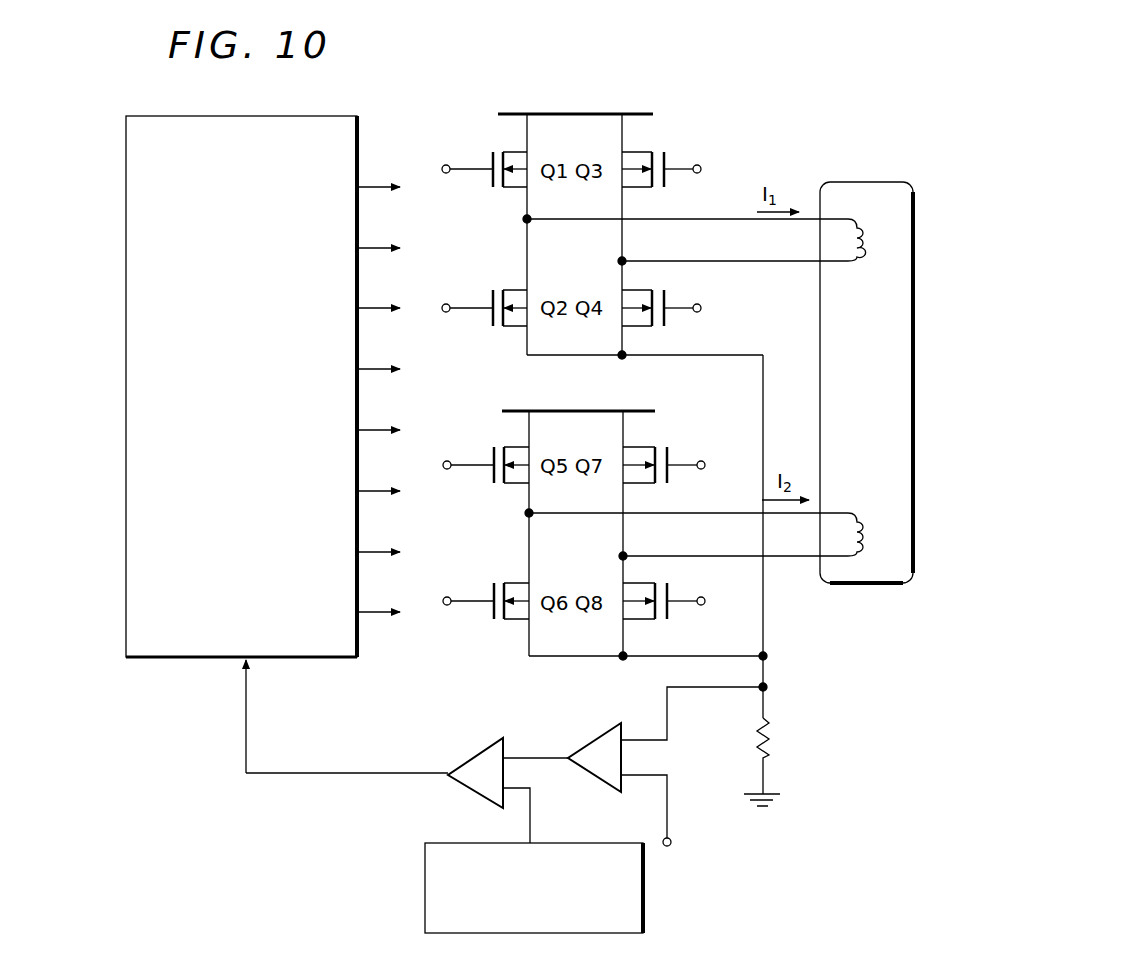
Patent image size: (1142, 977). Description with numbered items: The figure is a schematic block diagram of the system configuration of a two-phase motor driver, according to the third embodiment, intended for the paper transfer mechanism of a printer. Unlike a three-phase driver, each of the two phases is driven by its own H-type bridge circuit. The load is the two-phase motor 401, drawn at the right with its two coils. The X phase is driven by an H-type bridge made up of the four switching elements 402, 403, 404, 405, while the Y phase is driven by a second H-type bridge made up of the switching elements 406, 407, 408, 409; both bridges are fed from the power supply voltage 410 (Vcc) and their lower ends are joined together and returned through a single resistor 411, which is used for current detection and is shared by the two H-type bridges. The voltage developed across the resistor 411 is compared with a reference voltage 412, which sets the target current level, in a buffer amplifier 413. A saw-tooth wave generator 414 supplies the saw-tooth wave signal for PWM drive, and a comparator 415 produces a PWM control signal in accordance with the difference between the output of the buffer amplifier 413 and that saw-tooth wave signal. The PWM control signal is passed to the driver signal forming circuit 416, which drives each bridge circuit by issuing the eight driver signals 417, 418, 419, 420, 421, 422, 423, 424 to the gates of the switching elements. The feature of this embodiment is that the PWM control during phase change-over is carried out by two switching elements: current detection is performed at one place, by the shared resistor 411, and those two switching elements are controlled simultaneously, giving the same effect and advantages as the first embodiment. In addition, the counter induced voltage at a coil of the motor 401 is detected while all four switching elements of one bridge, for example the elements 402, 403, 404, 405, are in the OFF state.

The two-phase motor 401 is at (872, 586).
The switching element 402 is at (496, 146).
The switching element 403 is at (493, 283).
The switching element 404 is at (664, 146).
The switching element 405 is at (668, 282).
The switching element 406 is at (500, 442).
The switching element 407 is at (500, 578).
The switching element 408 is at (661, 441).
The switching element 409 is at (663, 580).
The power supply voltage Vcc 410 is at (498, 113).
The resistor for current detection 411 is at (776, 732).
The reference voltage 412 is at (686, 857).
The buffer amplifier 413 is at (622, 731).
The saw-tooth wave generator 414 is at (425, 881).
The comparator 415 is at (505, 740).
The driver signal forming circuit 416 is at (345, 657).
The driver signal 417 is at (381, 172).
The driver signal 418 is at (381, 233).
The driver signal 419 is at (381, 293).
The driver signal 420 is at (381, 354).
The driver signal 421 is at (381, 415).
The driver signal 422 is at (381, 476).
The driver signal 423 is at (381, 537).
The driver signal 424 is at (381, 597).